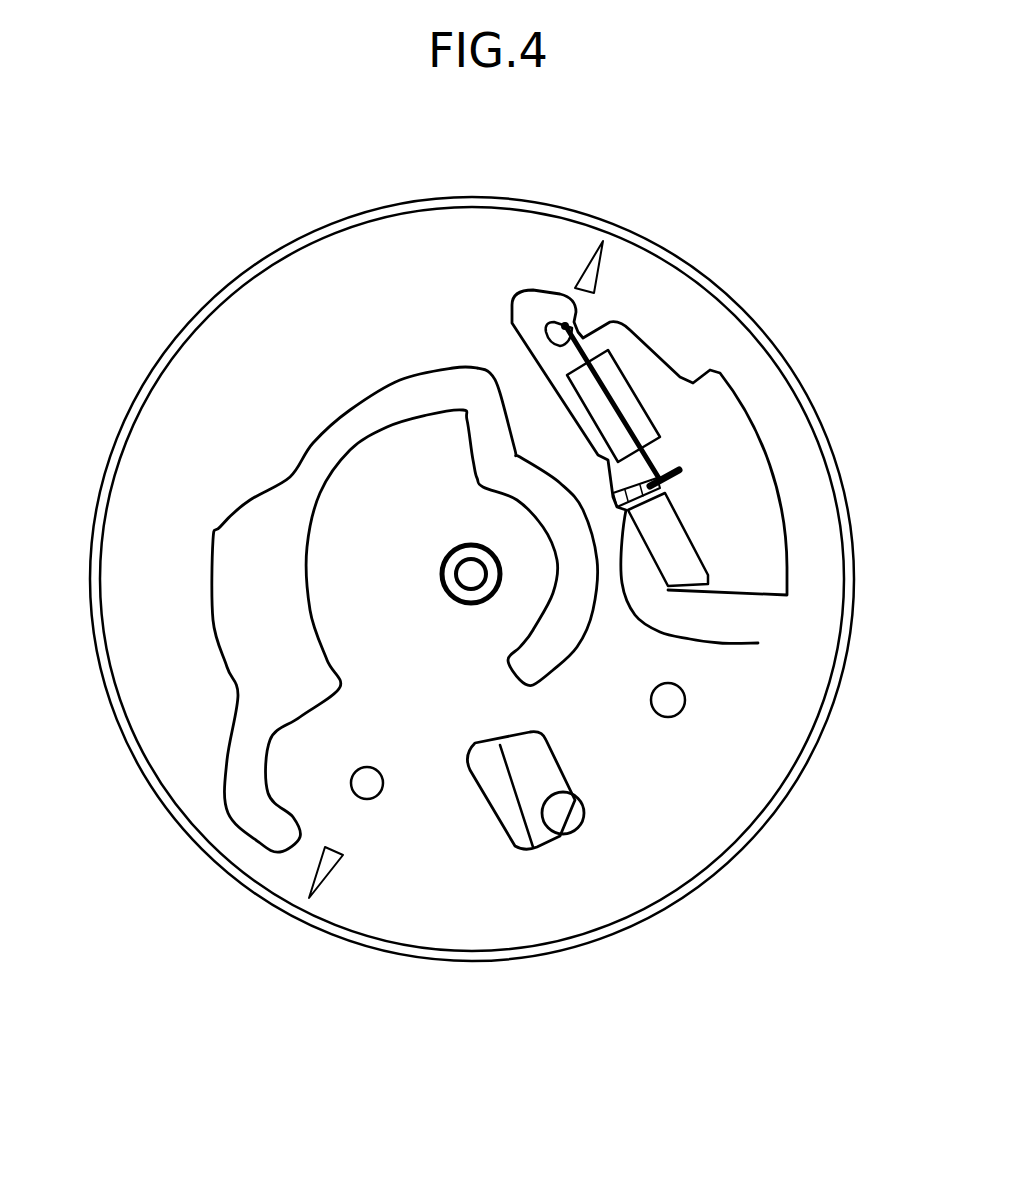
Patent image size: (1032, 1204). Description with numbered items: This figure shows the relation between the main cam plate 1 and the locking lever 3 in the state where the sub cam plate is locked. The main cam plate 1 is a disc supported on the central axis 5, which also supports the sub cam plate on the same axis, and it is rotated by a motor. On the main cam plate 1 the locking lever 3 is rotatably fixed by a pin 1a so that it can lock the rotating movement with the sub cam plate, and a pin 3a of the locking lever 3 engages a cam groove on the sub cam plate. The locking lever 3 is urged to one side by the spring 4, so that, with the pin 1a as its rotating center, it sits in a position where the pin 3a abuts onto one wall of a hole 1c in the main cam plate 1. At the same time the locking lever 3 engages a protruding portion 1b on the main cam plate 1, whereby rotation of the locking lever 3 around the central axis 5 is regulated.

The main cam plate 1 is at (715, 822).
The pin 1a is at (677, 702).
The protruding portion 1b is at (758, 643).
The hole 1c is at (505, 817).
The locking lever 3 is at (677, 555).
The pin 3a is at (567, 818).
The spring 4 is at (621, 390).
The central axis 5 is at (442, 568).